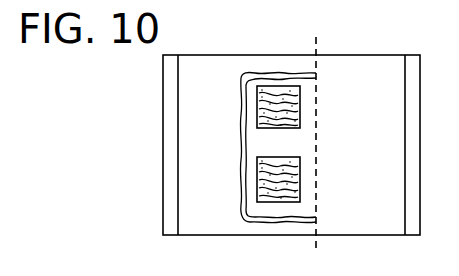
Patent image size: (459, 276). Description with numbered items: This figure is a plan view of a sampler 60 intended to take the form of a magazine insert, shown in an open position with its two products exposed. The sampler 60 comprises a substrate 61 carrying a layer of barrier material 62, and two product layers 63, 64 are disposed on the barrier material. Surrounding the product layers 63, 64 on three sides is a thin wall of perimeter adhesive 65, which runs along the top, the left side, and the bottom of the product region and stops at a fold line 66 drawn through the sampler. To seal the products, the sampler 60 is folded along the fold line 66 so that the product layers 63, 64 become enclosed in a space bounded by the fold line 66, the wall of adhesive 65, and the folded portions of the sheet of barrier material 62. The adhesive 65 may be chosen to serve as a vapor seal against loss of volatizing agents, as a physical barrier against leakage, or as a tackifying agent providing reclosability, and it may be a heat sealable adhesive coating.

The sampler 60 is at (290, 50).
The substrate 61 is at (172, 220).
The layer of barrier material 62 is at (223, 220).
The product layer 63 is at (257, 115).
The product layer 64 is at (257, 190).
The wall of perimeter adhesive 65 is at (245, 74).
The fold line 66 is at (317, 253).